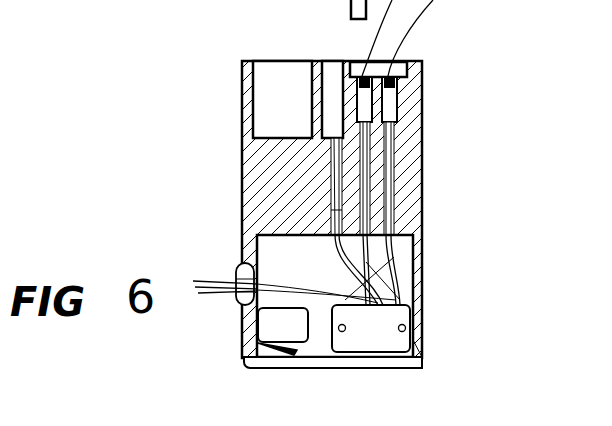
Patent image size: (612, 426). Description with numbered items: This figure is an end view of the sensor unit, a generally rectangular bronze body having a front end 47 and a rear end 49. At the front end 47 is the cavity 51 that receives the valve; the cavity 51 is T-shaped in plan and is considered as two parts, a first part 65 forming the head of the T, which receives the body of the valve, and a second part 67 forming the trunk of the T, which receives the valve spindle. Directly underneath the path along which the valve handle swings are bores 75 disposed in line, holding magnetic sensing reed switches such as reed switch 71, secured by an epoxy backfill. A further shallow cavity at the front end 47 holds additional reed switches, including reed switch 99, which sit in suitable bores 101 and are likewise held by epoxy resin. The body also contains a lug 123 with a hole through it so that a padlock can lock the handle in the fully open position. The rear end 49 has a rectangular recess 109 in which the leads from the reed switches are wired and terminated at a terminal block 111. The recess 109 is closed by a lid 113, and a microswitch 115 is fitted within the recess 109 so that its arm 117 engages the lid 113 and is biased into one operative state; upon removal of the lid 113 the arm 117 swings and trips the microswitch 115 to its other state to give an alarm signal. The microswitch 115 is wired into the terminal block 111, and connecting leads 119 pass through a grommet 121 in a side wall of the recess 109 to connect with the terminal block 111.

The cavity 51 is at (276, 98).
The lug 123 is at (340, 3).
The first part of the cavity 65 is at (292, 80).
The second part of the cavity 67 is at (334, 76).
The front end 47 is at (420, 88).
The reed switch 99 is at (391, 68).
The bores 101 is at (367, 171).
The recess 109 is at (403, 245).
The reed switch 71 is at (330, 165).
The bores 75 is at (330, 211).
The grommet 121 is at (243, 262).
The connecting leads 119 is at (236, 281).
The microswitch 115 is at (296, 334).
The terminal block 111 is at (386, 334).
The arm 117 is at (266, 359).
The lid 113 is at (323, 368).
The rear end 49 is at (423, 343).